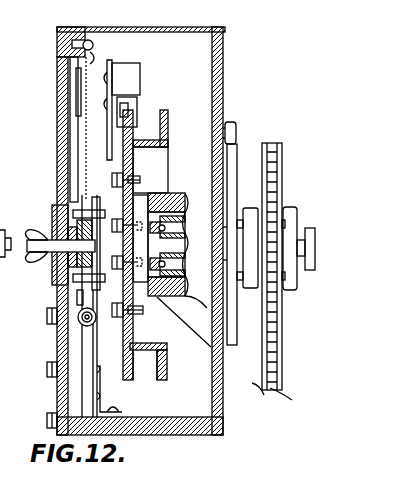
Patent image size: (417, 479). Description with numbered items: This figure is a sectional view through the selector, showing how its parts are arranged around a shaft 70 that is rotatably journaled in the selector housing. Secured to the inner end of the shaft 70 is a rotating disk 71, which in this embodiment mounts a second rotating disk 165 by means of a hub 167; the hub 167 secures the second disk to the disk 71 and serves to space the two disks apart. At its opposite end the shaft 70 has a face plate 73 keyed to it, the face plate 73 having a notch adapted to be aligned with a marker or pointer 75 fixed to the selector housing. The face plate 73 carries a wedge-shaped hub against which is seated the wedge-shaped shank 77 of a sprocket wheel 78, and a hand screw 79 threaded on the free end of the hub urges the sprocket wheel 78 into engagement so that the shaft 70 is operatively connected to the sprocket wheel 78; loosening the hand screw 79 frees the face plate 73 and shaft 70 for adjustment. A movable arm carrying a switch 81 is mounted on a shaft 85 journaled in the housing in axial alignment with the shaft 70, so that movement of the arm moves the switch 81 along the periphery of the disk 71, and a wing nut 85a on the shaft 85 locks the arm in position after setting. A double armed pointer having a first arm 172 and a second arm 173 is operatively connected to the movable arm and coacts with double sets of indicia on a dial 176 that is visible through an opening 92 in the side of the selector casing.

The shaft 70 is at (168, 244).
The rotating disk 71 is at (133, 135).
The face plate 73 is at (238, 334).
The marker or pointer 75 is at (237, 135).
The wedge-shaped shank 77 is at (250, 210).
The sprocket wheel 78 is at (283, 151).
The hand screw 79 is at (293, 208).
The switch 81 is at (133, 72).
The shaft 85 is at (55, 236).
The wing nut 85a is at (46, 260).
The opening 92 is at (70, 65).
The second rotating disk 165 is at (168, 127).
The hub 167 is at (135, 165).
The first arm 172 is at (76, 81).
The second arm 173 is at (77, 298).
The dial 176 is at (92, 64).